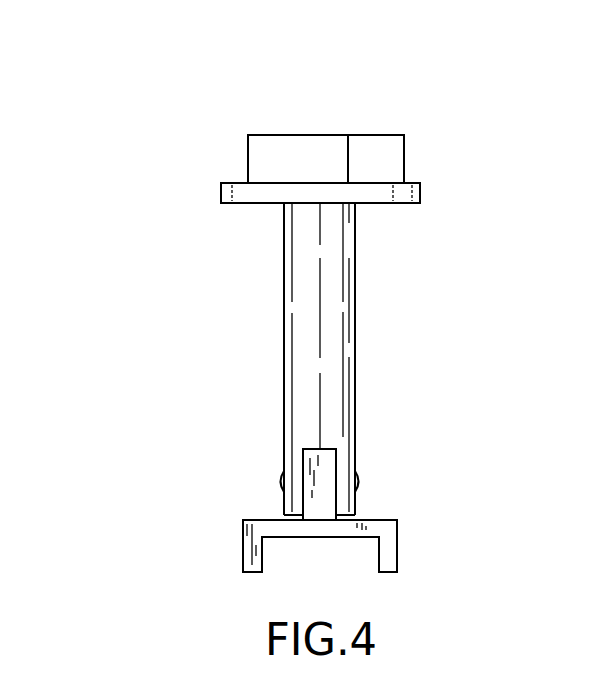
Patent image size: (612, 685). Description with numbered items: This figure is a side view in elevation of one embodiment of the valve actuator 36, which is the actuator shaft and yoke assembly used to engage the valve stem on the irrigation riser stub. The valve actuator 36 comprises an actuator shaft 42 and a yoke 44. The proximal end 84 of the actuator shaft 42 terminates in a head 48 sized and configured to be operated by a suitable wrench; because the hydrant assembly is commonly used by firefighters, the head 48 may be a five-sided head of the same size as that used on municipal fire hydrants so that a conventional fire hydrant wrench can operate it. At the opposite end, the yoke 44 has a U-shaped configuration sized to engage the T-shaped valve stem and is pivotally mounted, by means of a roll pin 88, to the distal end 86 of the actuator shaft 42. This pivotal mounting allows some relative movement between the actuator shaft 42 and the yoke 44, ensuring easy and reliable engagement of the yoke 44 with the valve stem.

The valve actuator 36 is at (124, 149).
The head 48 is at (393, 135).
The actuator shaft 42 is at (270, 330).
The proximal end 84 is at (349, 223).
The distal end 86 is at (355, 459).
The roll pin 88 is at (280, 474).
The yoke 44 is at (411, 549).